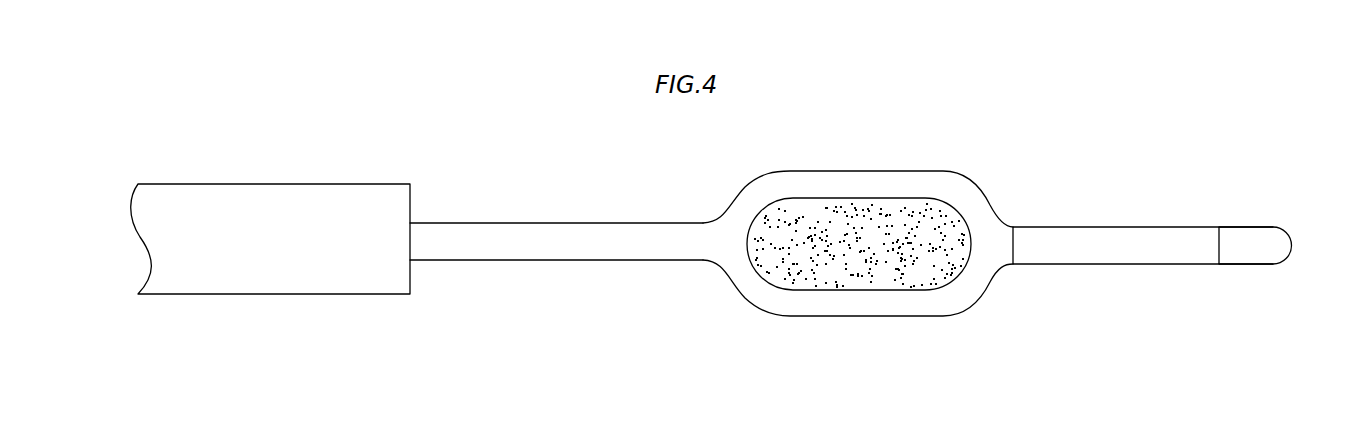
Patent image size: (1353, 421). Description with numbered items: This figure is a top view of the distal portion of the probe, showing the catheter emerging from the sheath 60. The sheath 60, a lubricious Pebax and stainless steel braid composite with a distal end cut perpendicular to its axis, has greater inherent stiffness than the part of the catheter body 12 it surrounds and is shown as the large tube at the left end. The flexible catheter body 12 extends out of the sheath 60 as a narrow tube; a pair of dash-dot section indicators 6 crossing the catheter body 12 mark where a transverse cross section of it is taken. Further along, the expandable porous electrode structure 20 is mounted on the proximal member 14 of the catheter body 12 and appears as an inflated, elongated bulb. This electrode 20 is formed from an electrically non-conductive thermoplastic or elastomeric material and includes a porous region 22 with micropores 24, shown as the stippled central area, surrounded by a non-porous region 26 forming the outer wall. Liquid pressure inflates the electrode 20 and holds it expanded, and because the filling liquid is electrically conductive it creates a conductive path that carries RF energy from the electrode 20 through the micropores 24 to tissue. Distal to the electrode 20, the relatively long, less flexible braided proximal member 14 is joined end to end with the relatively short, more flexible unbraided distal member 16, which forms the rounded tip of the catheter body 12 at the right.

The sheath 60 is at (278, 197).
The catheter body 12 is at (490, 221).
The section line 6- 6 is at (615, 304).
The expandable porous electrode structure 20 is at (988, 167).
The porous region 22 is at (866, 280).
The micropores 24 is at (894, 276).
The non-porous region 26 is at (955, 295).
The proximal member 14 is at (1093, 226).
The distal member 16 is at (1237, 226).